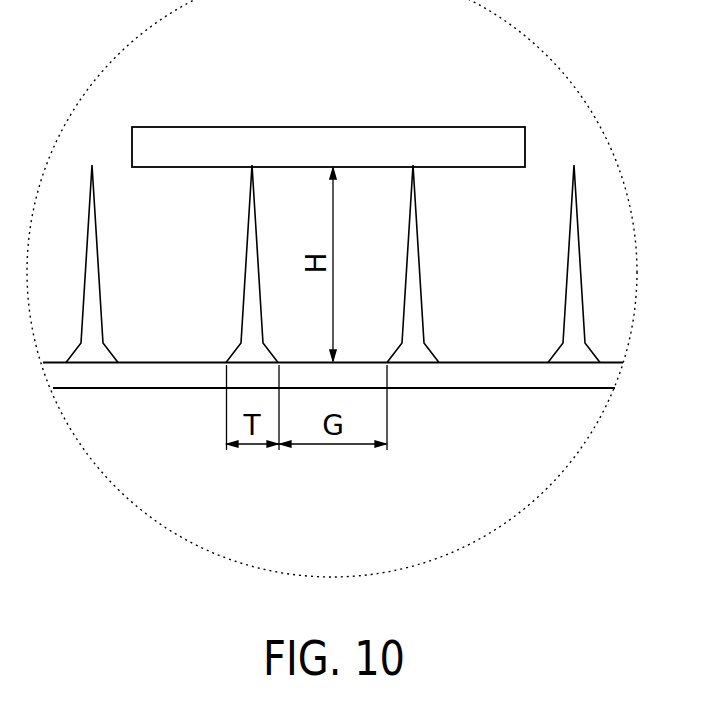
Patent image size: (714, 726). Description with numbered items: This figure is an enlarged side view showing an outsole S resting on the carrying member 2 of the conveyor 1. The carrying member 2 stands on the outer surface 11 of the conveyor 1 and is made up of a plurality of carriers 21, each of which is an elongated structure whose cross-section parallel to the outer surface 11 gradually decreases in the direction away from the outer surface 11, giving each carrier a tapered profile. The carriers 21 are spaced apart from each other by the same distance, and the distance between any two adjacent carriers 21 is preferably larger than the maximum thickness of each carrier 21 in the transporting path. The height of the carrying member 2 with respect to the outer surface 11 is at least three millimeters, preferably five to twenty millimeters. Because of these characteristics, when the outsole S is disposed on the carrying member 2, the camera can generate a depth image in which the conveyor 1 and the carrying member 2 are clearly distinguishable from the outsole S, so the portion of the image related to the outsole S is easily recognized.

The conveyor 1 is at (333, 342).
The outer surface 11 is at (170, 362).
The carrying member 2 is at (414, 268).
The carrier 21 is at (251, 268).
The outsole S is at (205, 133).